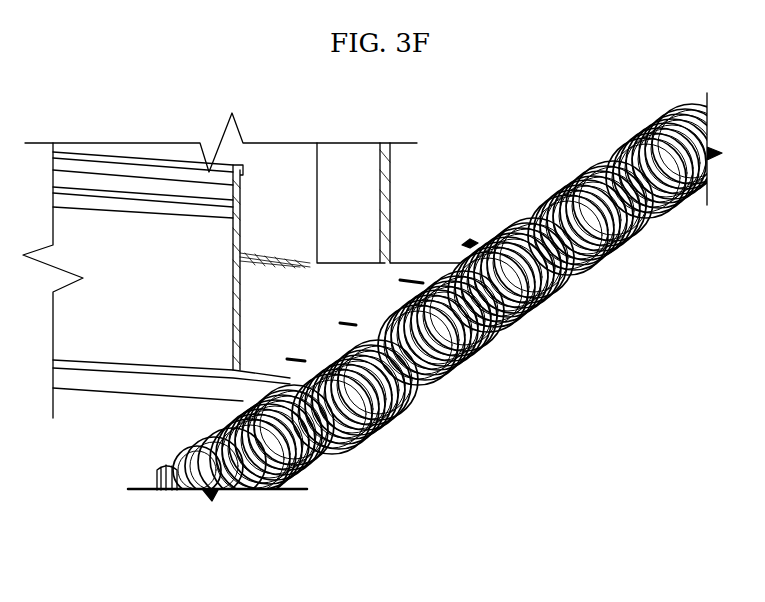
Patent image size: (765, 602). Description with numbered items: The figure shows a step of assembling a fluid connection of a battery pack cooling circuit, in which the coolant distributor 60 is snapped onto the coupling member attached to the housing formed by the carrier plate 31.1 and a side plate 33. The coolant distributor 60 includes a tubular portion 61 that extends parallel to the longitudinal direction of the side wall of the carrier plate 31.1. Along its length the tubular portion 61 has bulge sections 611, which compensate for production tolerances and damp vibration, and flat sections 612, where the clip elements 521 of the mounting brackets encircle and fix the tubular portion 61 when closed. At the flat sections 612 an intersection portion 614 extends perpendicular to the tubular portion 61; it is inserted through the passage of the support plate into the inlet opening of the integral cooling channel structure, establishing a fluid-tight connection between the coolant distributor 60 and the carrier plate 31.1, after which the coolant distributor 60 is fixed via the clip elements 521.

The side plate 33 is at (147, 303).
The carrier plate 31.1 is at (333, 336).
The coolant distributor 60 is at (376, 336).
The bulge section 611 is at (637, 240).
The flat section 612 is at (467, 240).
The clip element 521 is at (443, 385).
The tubular portion 61 is at (212, 501).
The intersection portion 614 is at (155, 474).